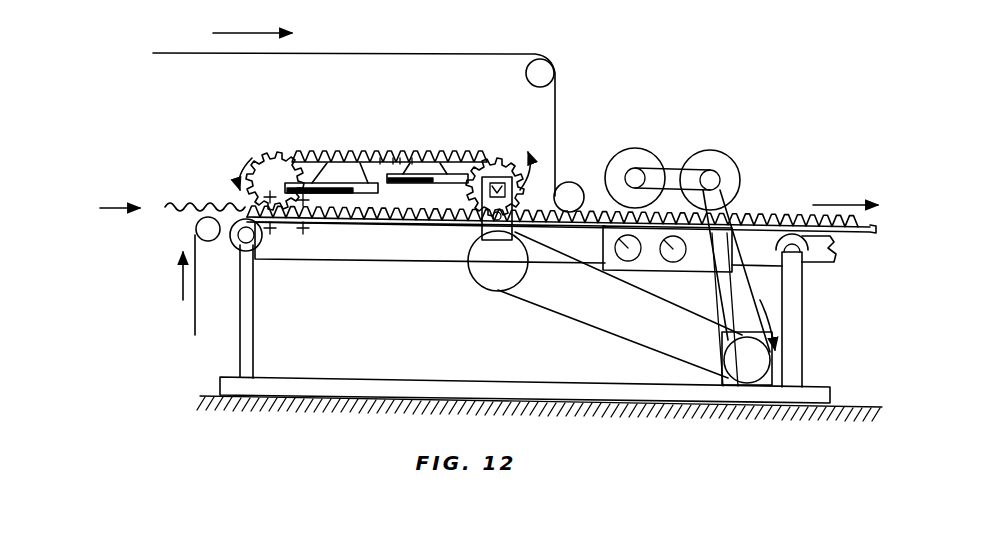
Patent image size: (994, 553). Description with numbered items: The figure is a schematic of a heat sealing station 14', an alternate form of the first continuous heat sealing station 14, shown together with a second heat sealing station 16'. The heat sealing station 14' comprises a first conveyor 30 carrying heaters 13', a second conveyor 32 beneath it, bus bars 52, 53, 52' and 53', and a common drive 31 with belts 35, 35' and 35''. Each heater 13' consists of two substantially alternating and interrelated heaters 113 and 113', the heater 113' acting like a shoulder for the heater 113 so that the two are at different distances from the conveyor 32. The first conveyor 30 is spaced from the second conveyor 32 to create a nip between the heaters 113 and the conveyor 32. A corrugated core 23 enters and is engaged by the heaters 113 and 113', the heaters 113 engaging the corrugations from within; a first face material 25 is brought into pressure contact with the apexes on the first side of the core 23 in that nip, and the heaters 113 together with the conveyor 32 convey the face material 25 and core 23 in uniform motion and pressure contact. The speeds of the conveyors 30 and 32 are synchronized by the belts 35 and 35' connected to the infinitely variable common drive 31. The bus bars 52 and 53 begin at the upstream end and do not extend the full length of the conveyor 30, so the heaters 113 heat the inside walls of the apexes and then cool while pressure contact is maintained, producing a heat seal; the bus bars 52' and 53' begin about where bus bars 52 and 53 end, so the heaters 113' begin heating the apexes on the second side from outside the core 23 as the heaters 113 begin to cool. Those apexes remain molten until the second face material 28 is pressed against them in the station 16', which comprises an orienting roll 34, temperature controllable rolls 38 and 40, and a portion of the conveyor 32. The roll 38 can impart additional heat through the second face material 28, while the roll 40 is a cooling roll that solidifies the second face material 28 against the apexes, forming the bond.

The heaters 13' is at (430, 256).
The first continuous heat sealing station 14 is at (296, 226).
The heat sealing station 14' is at (368, 123).
The station 16' is at (677, 103).
The corrugated core 23 is at (172, 207).
The first face material 25 is at (195, 305).
The second face material 28 is at (557, 108).
The first conveyor 30 is at (260, 142).
The common drive 31 is at (757, 368).
The second conveyor 32 is at (333, 268).
The orienting roll 34 is at (566, 192).
The belt 35 is at (620, 305).
The belt 35' is at (807, 316).
The belt 35'' is at (761, 256).
The temperature controllable roll 38 is at (643, 156).
The temperature controllable roll 40 is at (713, 160).
The bus bar 52 is at (331, 153).
The bus bar 52' is at (435, 147).
The bus bar 53 is at (344, 155).
The bus bar 53' is at (463, 148).
The heater 113 is at (412, 122).
The heater 113' is at (389, 132).